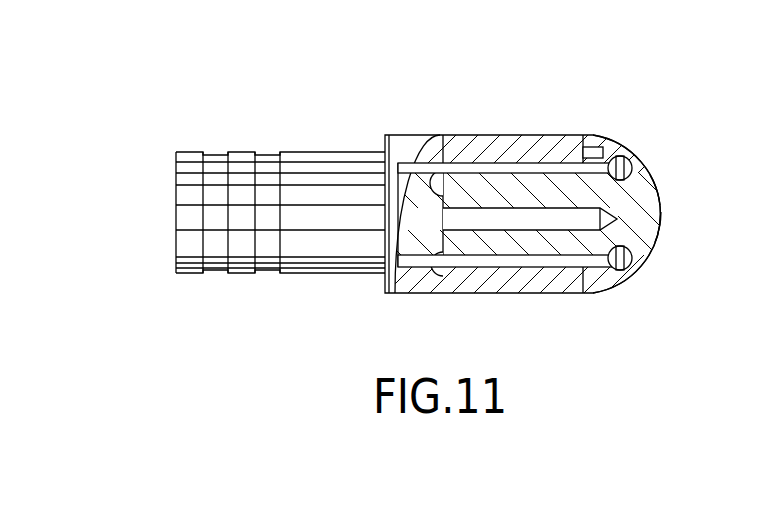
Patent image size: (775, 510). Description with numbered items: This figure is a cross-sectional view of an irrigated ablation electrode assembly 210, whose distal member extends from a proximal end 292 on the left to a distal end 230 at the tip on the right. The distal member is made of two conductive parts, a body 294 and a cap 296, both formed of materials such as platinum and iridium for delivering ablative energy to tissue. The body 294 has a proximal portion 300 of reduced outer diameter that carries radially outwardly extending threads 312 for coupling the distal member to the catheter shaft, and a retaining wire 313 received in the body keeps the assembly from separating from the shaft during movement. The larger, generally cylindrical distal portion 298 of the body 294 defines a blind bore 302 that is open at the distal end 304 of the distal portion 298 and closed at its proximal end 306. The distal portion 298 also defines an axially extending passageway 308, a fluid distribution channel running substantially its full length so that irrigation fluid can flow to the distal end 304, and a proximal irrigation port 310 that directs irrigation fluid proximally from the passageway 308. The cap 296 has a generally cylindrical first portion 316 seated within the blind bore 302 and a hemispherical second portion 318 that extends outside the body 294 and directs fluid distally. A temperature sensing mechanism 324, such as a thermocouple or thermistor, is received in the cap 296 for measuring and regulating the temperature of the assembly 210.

The ablation electrode assembly 210 is at (368, 327).
The distal end 230 is at (660, 200).
The proximal end 292 is at (176, 157).
The body 294 is at (410, 118).
The cap 296 is at (690, 152).
The distal portion 298 is at (620, 298).
The proximal portion 300 is at (385, 287).
The blind bore 302 is at (606, 153).
The distal end 304 is at (624, 153).
The proximal end 306 is at (449, 136).
The axially extending passageway 308 is at (463, 262).
The proximal irrigation port 310 is at (590, 143).
The radially outwardly extending threads 312 is at (241, 152).
The retaining wire 313 is at (280, 172).
The first portion 316 is at (632, 268).
The second portion 318 is at (659, 228).
The temperature sensing mechanism 324 is at (517, 213).